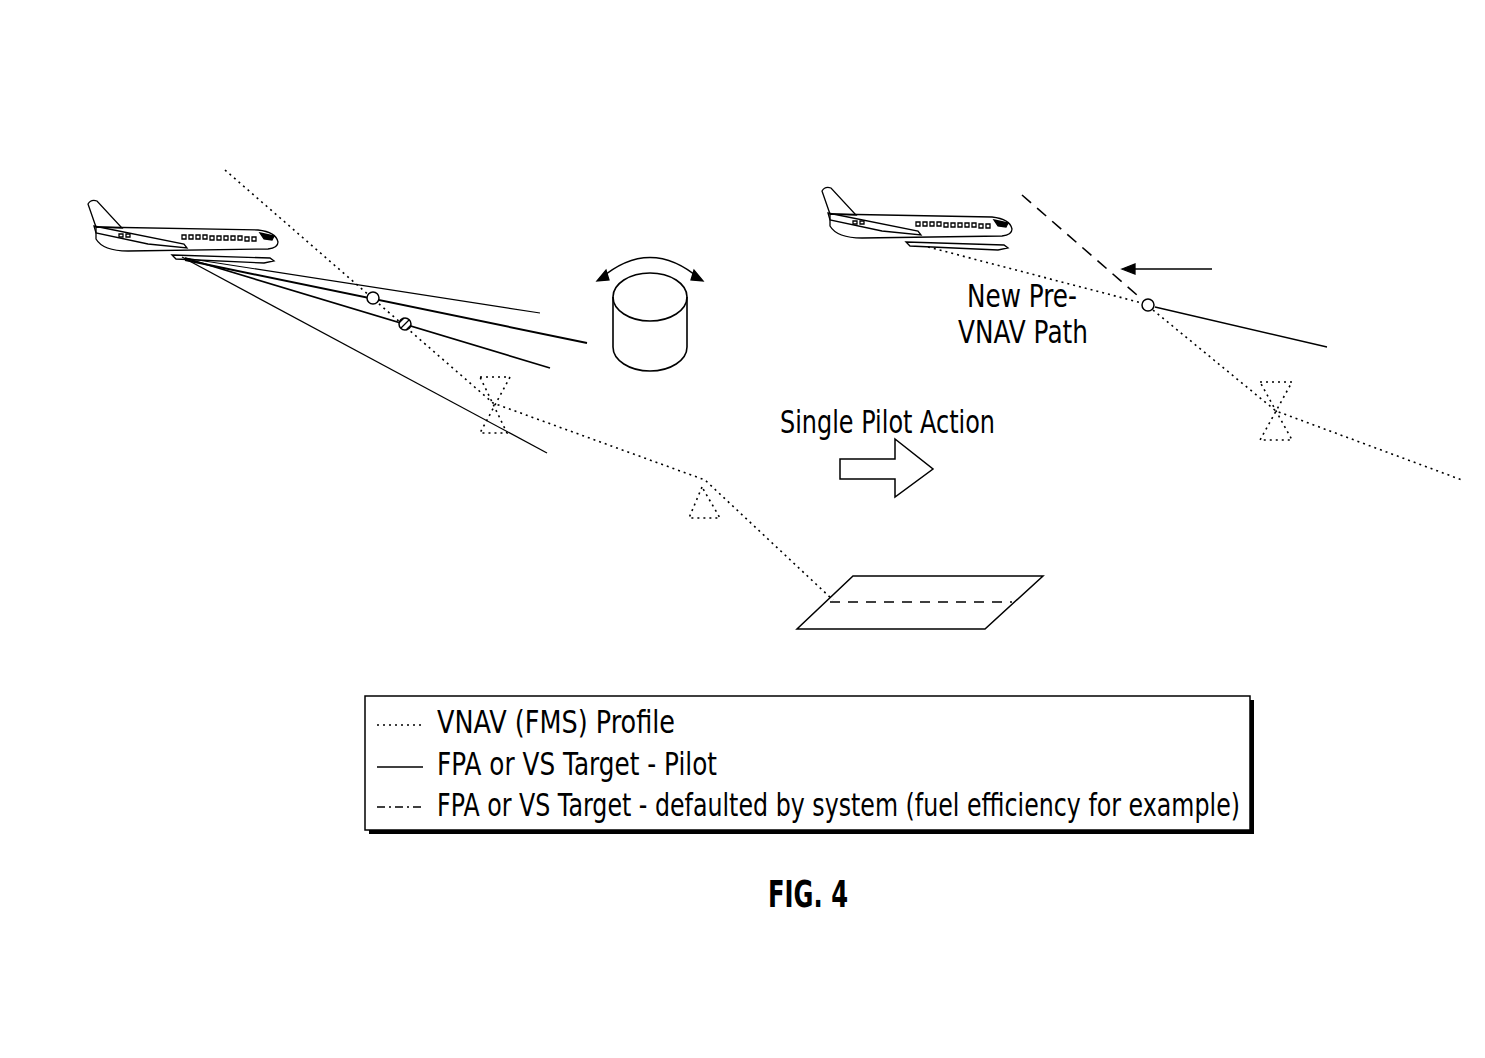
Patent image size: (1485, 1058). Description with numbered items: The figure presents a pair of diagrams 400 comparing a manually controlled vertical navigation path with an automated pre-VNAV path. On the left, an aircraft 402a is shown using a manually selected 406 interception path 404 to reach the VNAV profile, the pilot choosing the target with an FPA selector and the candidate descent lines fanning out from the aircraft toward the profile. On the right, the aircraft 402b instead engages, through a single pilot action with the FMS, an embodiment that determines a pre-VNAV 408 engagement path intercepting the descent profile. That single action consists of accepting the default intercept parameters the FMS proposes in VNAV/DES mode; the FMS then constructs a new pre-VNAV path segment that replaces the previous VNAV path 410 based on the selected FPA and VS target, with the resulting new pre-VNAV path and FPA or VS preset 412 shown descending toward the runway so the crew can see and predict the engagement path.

The pair of diagrams 400 is at (1255, 103).
The aircraft 402a is at (163, 231).
The aircraft 402b is at (903, 218).
The interception path 404 is at (457, 315).
The manual selection 406 is at (688, 325).
The pre-VNAV engagement path 408 is at (1058, 278).
The previous VNAV path 410 is at (1170, 268).
The new pre-VNAV path with FPA or VS preset 412 is at (1228, 372).